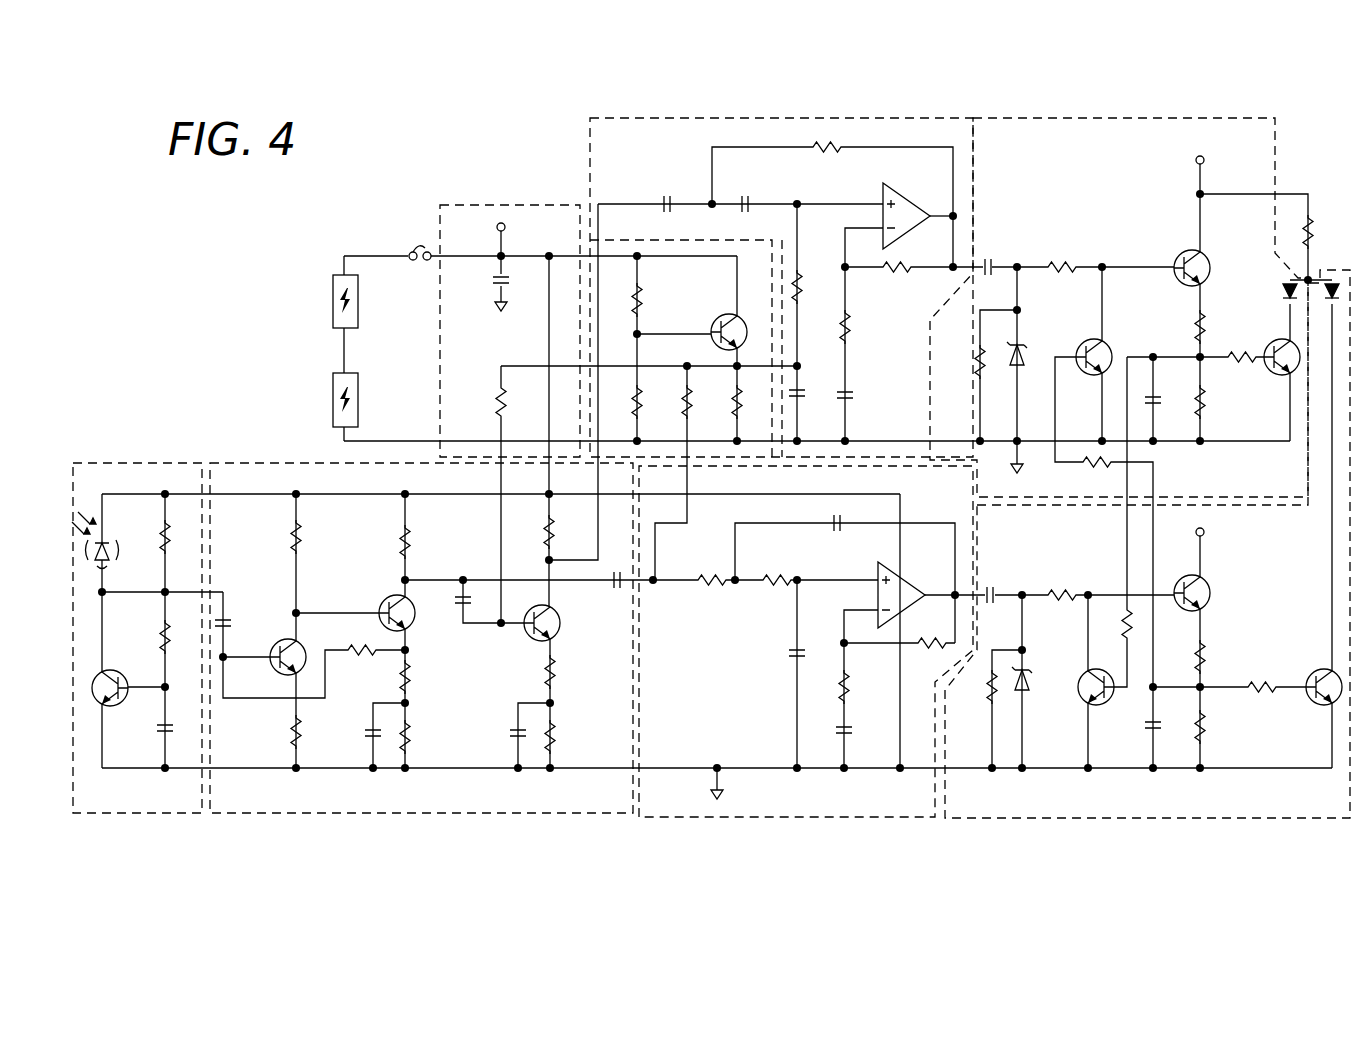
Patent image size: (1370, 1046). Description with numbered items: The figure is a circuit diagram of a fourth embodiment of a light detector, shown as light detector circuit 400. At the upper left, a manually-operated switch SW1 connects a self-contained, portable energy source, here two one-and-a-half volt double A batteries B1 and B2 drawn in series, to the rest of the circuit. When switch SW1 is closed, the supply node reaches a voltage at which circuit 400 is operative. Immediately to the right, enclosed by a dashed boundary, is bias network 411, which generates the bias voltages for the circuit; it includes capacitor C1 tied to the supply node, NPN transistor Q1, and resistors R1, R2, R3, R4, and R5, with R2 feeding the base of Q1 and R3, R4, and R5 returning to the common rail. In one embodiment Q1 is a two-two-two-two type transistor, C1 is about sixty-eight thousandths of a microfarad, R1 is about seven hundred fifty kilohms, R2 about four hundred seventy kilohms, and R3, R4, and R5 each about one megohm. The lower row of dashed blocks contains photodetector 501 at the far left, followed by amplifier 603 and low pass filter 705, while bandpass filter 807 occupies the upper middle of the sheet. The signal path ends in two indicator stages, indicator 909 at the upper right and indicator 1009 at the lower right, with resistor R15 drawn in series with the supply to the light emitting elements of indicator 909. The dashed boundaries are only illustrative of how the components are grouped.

The light detector circuit 400 is at (1277, 76).
The bias network 411 is at (569, 303).
The bandpass filter 807 is at (817, 323).
The indicator 909 is at (1145, 418).
The photodetector 501 is at (120, 813).
The amplifier 603 is at (338, 813).
The low pass filter 705 is at (647, 817).
The indicator 1009 is at (965, 818).
The manually-operated switch SW1 is at (407, 251).
The battery B1 is at (332, 398).
The battery B2 is at (332, 292).
The capacitor C1 is at (493, 282).
The resistor R1 is at (497, 408).
The resistor R2 is at (633, 298).
The resistor R3 is at (633, 410).
The resistor R4 is at (683, 410).
The resistor R5 is at (733, 410).
The NPN transistor Q1 is at (718, 318).
The resistor R15 is at (1315, 228).